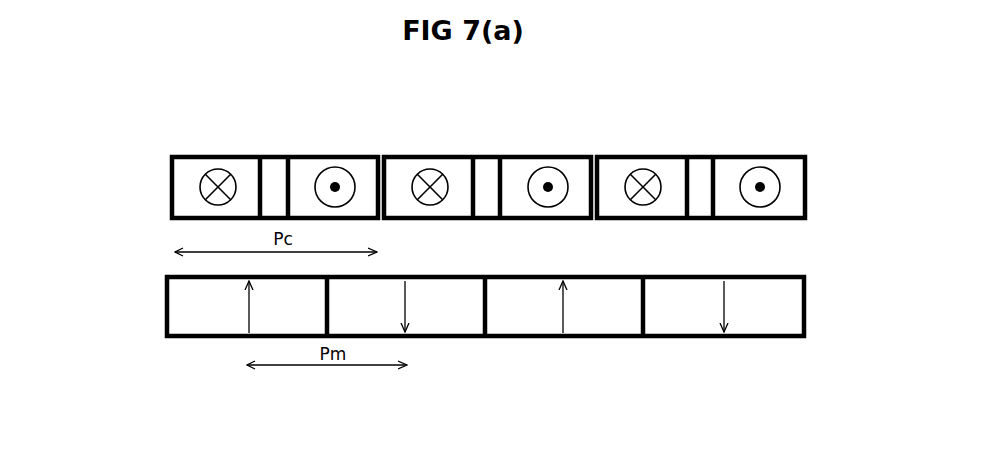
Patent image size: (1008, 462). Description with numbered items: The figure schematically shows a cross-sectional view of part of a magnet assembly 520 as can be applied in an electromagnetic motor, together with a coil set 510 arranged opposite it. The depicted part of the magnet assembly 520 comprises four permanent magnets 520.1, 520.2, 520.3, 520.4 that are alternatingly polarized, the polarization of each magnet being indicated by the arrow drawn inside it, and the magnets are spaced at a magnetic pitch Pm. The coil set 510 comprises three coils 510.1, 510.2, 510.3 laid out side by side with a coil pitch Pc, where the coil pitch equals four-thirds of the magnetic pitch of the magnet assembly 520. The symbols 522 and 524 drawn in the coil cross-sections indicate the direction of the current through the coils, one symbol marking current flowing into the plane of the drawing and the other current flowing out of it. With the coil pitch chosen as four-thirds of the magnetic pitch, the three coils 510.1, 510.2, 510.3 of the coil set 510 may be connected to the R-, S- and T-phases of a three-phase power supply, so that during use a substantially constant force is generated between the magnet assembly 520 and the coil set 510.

The coil set 510 is at (125, 132).
The coil 510.1 is at (248, 172).
The coil 510.2 is at (467, 170).
The coil 510.3 is at (672, 170).
The current direction symbol 522 is at (200, 190).
The current direction symbol 524 is at (320, 172).
The magnet assembly 520 is at (137, 303).
The permanent magnet 520.1 is at (183, 318).
The permanent magnet 520.2 is at (431, 330).
The permanent magnet 520.3 is at (537, 320).
The permanent magnet 520.4 is at (698, 314).